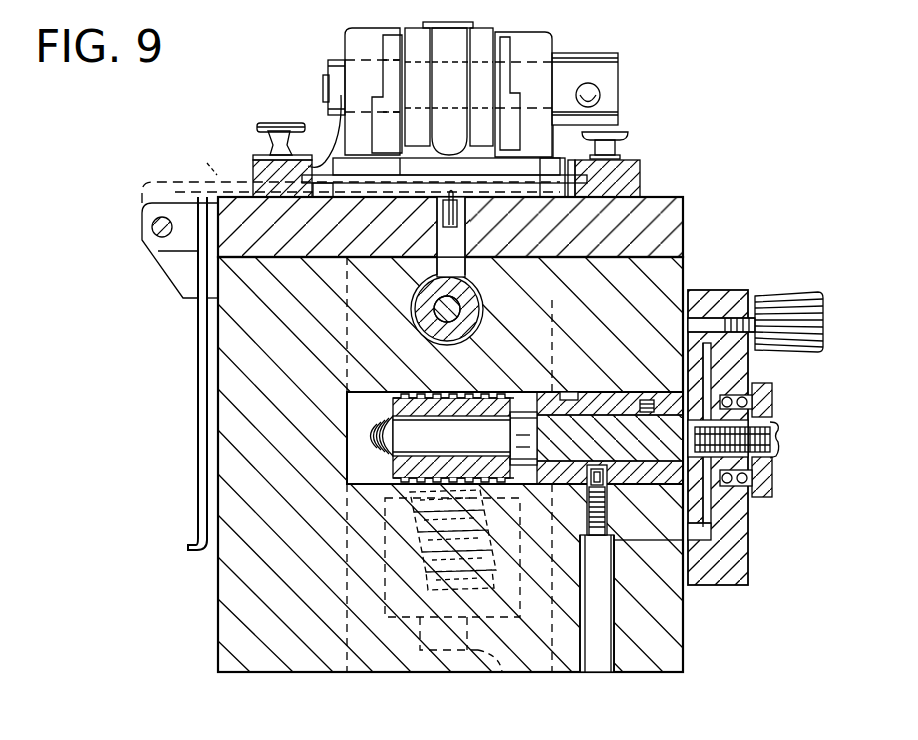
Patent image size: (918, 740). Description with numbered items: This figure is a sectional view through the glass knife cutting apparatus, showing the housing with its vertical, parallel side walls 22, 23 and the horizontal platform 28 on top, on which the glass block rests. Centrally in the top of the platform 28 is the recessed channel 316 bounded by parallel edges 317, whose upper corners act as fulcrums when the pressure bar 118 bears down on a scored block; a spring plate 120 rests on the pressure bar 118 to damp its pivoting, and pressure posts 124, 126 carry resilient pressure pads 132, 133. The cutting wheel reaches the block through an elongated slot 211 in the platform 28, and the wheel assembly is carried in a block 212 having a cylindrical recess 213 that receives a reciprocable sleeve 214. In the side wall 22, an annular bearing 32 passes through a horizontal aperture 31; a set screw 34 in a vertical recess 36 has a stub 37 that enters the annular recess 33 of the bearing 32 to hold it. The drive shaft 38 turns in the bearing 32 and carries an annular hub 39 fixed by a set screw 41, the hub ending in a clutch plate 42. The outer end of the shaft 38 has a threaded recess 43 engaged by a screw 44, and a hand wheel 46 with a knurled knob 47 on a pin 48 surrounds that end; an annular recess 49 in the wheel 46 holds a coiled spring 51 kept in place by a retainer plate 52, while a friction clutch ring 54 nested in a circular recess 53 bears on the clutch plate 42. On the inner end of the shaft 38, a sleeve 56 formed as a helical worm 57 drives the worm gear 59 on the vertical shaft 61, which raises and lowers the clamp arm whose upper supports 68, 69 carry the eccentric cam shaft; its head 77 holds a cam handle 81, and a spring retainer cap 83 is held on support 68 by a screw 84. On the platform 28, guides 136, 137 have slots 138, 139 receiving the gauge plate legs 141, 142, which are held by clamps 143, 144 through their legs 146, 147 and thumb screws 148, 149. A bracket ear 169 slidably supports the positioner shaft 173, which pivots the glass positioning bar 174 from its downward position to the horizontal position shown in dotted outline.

The side wall 22 is at (665, 638).
The side wall 23 is at (232, 588).
The platform 28 is at (685, 222).
The horizontal aperture 31 is at (546, 396).
The annular bearing 32 is at (606, 396).
The annular recess 33 is at (587, 392).
The set screw 34 is at (588, 510).
The vertical recess 36 is at (610, 643).
The stub 37 is at (482, 496).
The drive shaft 38 is at (548, 442).
The annular hub 39 is at (612, 503).
The set screw 41 is at (652, 396).
The clutch plate 42 is at (710, 518).
The threaded recess 43 is at (774, 443).
The screw 44 is at (780, 428).
The hand wheel 46 is at (740, 566).
The knob 47 is at (790, 310).
The pin 48 is at (722, 320).
The annular recess 49 is at (755, 483).
The coiled spring 51 is at (757, 391).
The retainer plate 52 is at (772, 400).
The circular recess 53 is at (700, 316).
The friction clutch ring 54 is at (708, 354).
The sleeve 56 is at (395, 399).
The helical worm 57 is at (425, 390).
The worm gear 59 is at (378, 446).
The vertical rotatable shaft 61 is at (453, 603).
The support 68 is at (356, 31).
The support 69 is at (546, 40).
The head 77 is at (615, 60).
The cam handle 81 is at (601, 91).
The spring retainer cap 83 is at (330, 60).
The screw 84 is at (325, 88).
The pressure bar 118 is at (456, 43).
The spring plate 120 is at (440, 26).
The pressure post 124 is at (390, 43).
The pressure post 126 is at (505, 36).
The pressure pad 132 is at (386, 158).
The pressure pad 133 is at (506, 160).
The guide 136 is at (258, 180).
The guide 137 is at (642, 174).
The horizontal slot 138 is at (265, 173).
The horizontal slot 139 is at (640, 181).
The leg 141 is at (332, 158).
The leg 142 is at (560, 168).
The clamp 143 is at (260, 158).
The clamp 144 is at (642, 164).
The leg 146 is at (296, 148).
The leg 147 is at (585, 148).
The thumb screw 148 is at (262, 130).
The thumb screw 149 is at (628, 136).
The ear 169 is at (180, 270).
The positioner shaft 173 is at (155, 223).
The glass positioning bar 174 is at (198, 342).
The elongated slot 211 is at (465, 268).
The block 212 is at (372, 658).
The cylindrical recess 213 is at (412, 308).
The cylindrical sleeve 214 is at (476, 326).
The recessed channel 316 is at (470, 203).
The edges 317 is at (410, 203).